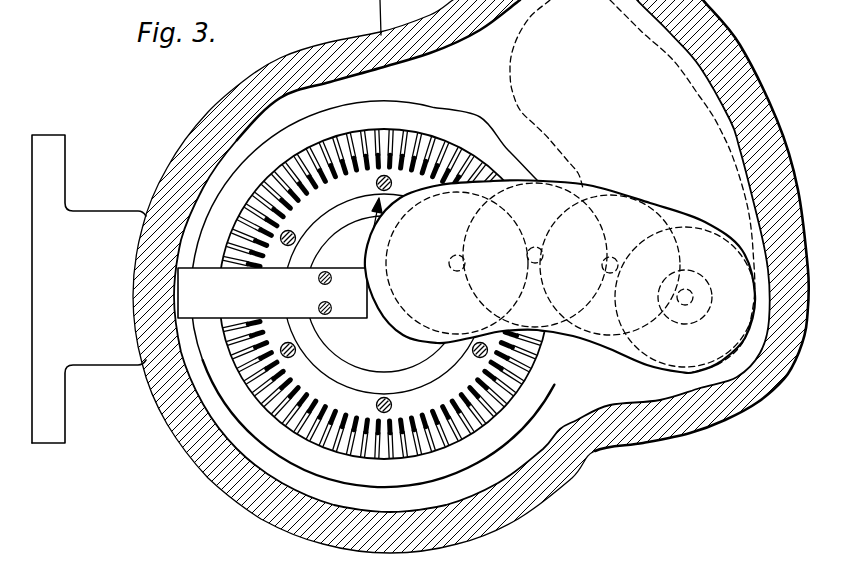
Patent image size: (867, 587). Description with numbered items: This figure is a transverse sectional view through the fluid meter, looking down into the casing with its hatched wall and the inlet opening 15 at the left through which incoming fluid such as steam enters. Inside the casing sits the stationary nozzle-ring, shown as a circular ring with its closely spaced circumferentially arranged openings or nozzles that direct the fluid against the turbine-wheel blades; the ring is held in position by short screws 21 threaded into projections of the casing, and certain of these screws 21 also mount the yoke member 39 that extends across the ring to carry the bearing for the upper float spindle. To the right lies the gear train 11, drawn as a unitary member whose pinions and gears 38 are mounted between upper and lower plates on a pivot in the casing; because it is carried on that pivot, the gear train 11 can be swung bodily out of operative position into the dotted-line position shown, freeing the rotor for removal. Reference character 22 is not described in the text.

The gear train 11 is at (593, 188).
The inlet opening 15 is at (66, 150).
The screws 21 is at (391, 177).
The stator coil slots 22 is at (297, 170).
The gears 38 is at (612, 349).
The yoke member 39 is at (190, 311).